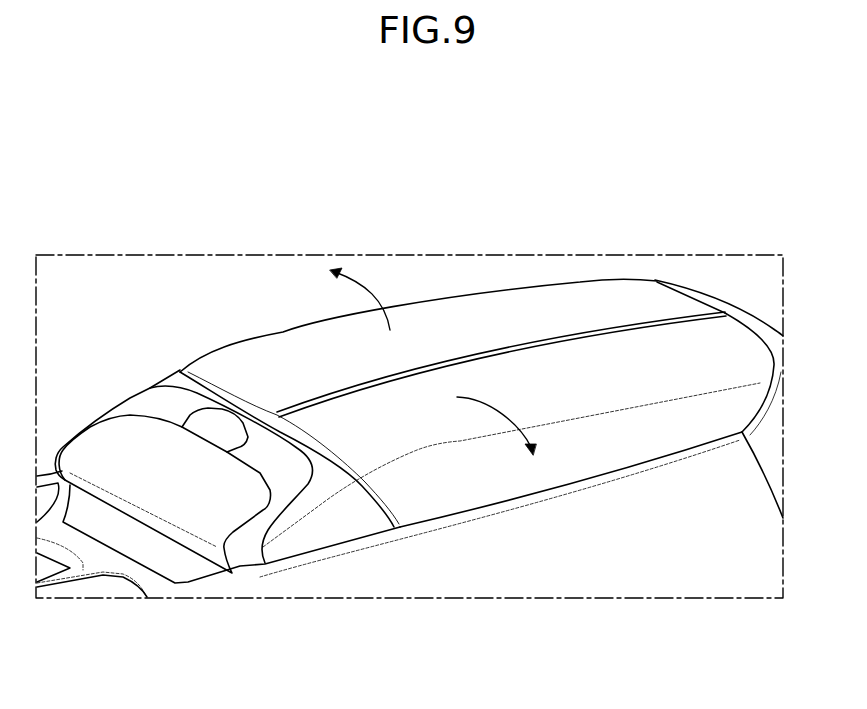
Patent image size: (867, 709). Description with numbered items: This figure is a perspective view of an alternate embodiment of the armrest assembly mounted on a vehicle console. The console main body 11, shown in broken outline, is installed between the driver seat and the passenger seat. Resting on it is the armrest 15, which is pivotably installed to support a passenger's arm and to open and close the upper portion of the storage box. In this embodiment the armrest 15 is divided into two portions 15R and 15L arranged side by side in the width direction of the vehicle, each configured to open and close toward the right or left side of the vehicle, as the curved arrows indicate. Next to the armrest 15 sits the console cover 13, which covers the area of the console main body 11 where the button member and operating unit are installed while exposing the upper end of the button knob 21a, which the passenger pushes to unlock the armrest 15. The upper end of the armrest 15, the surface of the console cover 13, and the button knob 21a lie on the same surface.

The console main body 11 is at (595, 565).
The console cover 13 is at (287, 477).
The armrest 15 is at (481, 331).
The right portion of the armrest 15R is at (543, 313).
The left portion of the armrest 15L is at (643, 362).
The button knob 21a is at (200, 425).